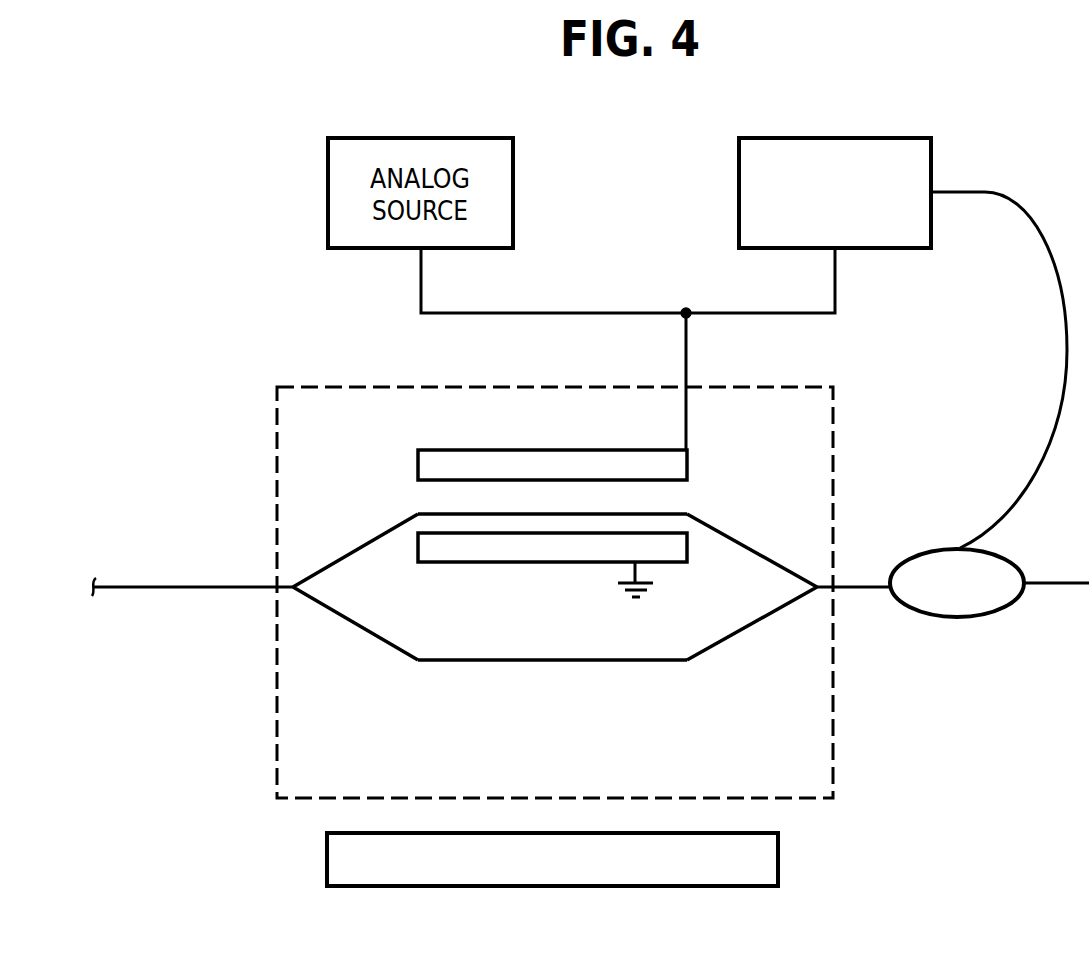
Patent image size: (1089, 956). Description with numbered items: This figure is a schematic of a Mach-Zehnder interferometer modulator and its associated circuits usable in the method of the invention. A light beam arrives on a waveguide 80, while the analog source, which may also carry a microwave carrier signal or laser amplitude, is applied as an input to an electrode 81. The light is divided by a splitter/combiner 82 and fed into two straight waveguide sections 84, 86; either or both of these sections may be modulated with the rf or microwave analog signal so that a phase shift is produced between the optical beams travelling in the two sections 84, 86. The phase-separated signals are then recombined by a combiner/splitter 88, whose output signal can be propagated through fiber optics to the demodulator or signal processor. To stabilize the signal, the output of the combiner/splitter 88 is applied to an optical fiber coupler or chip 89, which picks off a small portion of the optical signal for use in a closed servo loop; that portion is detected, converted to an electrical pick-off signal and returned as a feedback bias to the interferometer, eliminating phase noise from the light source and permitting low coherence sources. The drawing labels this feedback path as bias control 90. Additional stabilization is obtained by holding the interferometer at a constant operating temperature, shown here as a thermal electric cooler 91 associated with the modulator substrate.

The waveguide 80 is at (232, 587).
The electrode 81 is at (502, 450).
The splitter/combiner 82 is at (352, 625).
The straight waveguide section 84 is at (465, 513).
The straight waveguide section 86 is at (567, 660).
The combiner/splitter 88 is at (738, 628).
The optical fiber coupler or chip 89 is at (917, 612).
The bias control 90 is at (933, 173).
The thermal electric cooler 91 is at (640, 833).